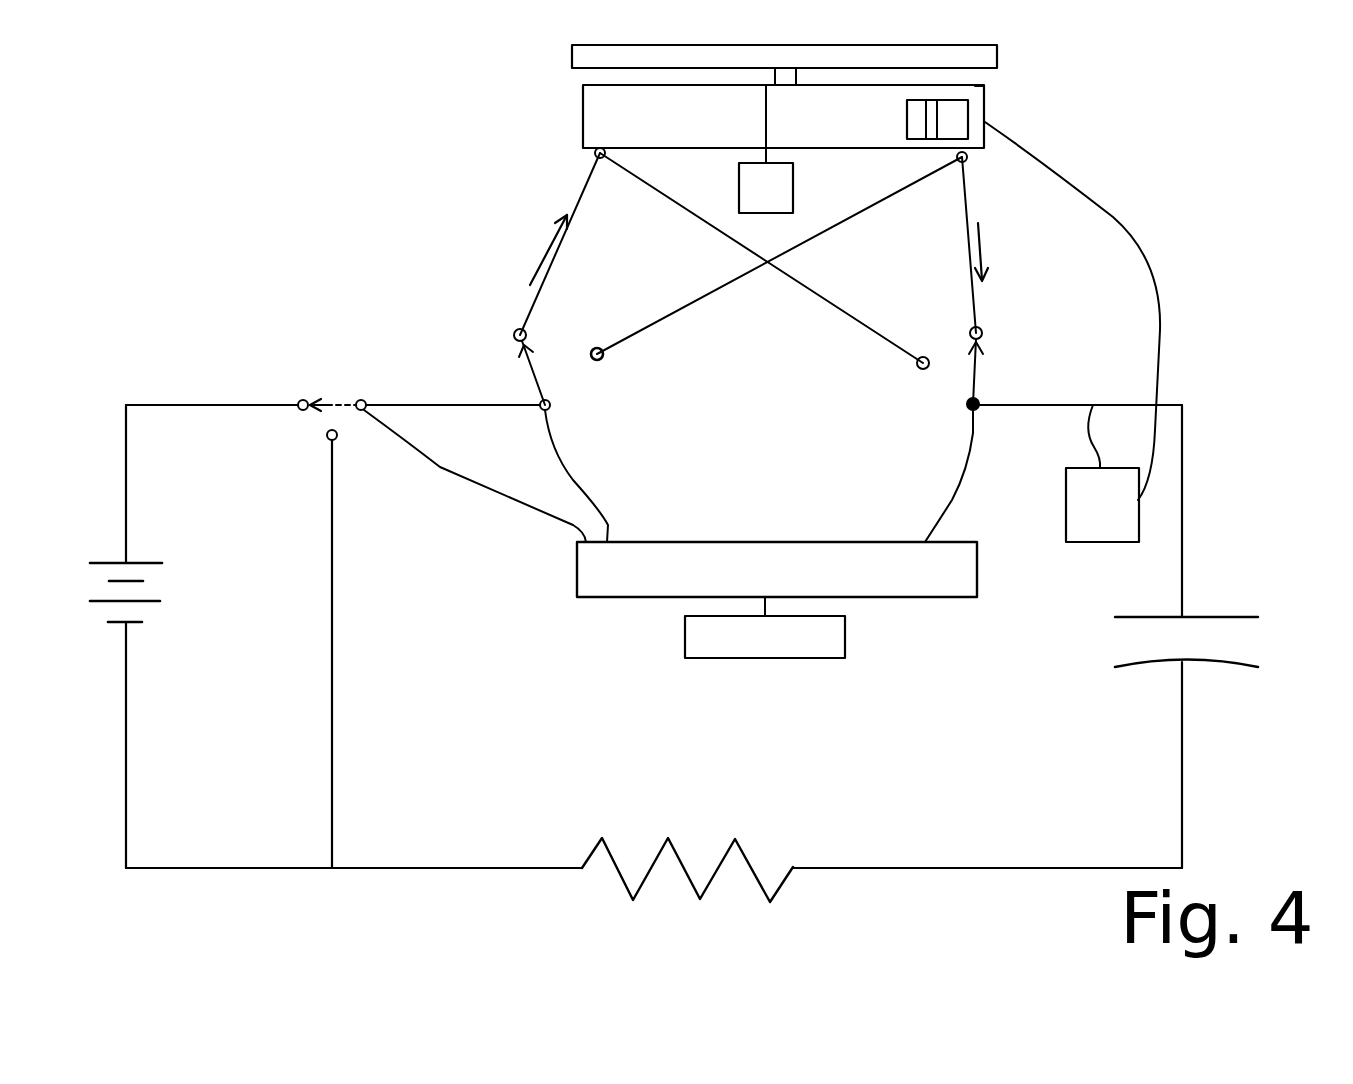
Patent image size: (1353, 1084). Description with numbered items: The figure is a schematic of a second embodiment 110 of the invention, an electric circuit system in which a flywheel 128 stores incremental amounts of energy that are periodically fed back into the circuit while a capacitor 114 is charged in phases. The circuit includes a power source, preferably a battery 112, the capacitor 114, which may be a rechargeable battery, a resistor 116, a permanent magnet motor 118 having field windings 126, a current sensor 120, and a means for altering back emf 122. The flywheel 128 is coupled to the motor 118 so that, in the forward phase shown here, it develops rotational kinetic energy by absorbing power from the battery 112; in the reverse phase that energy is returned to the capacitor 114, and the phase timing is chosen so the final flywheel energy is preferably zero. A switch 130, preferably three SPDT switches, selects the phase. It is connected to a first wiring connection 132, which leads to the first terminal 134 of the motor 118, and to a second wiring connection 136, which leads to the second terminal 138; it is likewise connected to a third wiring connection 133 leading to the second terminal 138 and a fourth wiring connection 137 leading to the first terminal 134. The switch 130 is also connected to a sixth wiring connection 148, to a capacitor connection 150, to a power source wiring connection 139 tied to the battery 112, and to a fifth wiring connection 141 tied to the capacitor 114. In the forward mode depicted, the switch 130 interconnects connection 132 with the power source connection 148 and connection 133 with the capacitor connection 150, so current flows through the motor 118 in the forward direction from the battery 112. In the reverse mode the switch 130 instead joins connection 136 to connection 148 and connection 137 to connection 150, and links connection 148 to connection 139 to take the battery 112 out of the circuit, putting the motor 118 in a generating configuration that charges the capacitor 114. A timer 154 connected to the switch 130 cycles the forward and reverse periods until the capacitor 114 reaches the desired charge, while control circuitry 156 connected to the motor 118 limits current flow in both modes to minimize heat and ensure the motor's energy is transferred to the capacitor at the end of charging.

The second embodiment 110 is at (1217, 147).
The battery 112 is at (166, 600).
The capacitor 114 is at (1199, 612).
The resistor 116 is at (712, 790).
The permanent magnet motor 118 is at (573, 114).
The current sensor 120 is at (1125, 517).
The means for altering back emf 122 is at (972, 88).
The field windings 126 is at (917, 127).
The flywheel 128 is at (995, 60).
The switch 130 is at (780, 582).
The first wiring connection 132 is at (511, 341).
The third wiring connection 133 is at (1020, 327).
The first terminal 134 is at (593, 155).
The second wiring connection 136 is at (603, 360).
The fourth wiring connection 137 is at (919, 371).
The second terminal 138 is at (967, 163).
The power source wiring connection 139 is at (303, 399).
The fifth wiring connection 141 is at (326, 441).
The sixth wiring connection 148 is at (540, 402).
The capacitor connection 150 is at (982, 402).
The timer 154 is at (782, 652).
The control circuitry 156 is at (787, 203).